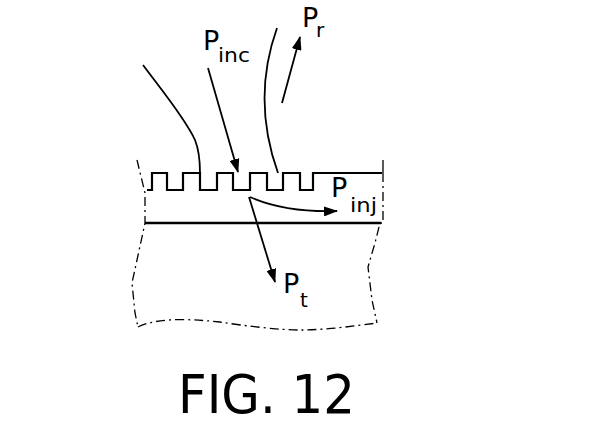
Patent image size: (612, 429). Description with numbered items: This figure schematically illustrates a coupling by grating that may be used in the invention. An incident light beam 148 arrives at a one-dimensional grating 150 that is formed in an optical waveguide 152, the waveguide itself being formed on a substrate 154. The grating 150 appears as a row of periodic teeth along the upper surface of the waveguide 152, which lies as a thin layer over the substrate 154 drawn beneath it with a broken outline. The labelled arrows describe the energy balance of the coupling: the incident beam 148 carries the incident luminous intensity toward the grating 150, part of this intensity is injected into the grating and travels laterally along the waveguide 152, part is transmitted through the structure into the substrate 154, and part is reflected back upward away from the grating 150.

The light beam 148 is at (270, 135).
The 1-D grating 150 is at (190, 172).
The optical waveguide 152 is at (167, 205).
The substrate 154 is at (343, 267).